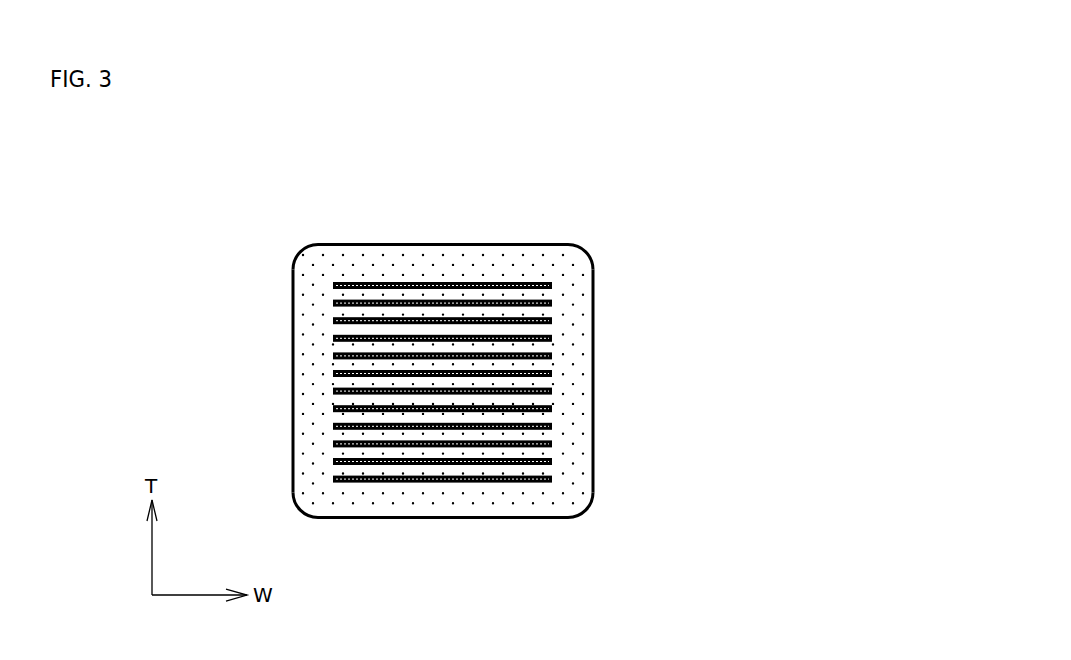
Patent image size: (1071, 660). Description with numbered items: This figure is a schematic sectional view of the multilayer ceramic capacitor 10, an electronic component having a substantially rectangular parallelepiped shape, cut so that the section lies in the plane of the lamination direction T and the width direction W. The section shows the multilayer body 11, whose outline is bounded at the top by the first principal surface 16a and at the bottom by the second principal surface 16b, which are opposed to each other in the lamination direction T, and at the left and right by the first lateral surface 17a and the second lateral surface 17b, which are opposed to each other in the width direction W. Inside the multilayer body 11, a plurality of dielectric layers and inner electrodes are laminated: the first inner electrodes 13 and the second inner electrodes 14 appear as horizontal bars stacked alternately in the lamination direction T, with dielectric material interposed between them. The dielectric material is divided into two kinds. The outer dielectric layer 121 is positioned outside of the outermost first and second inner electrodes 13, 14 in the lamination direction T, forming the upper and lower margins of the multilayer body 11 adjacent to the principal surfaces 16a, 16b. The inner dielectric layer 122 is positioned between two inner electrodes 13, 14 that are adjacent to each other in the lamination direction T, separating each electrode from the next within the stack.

The multilayer ceramic capacitor 10 is at (443, 348).
The multilayer body 11 is at (443, 376).
The outer dielectric layer 121 is at (485, 268).
The inner dielectric layer 122 is at (465, 312).
The first inner electrode 13 is at (537, 318).
The second inner electrode 14 is at (536, 447).
The first principal surface 16a is at (374, 244).
The second principal surface 16b is at (380, 518).
The first lateral surface 17a is at (293, 342).
The second lateral surface 17b is at (593, 347).